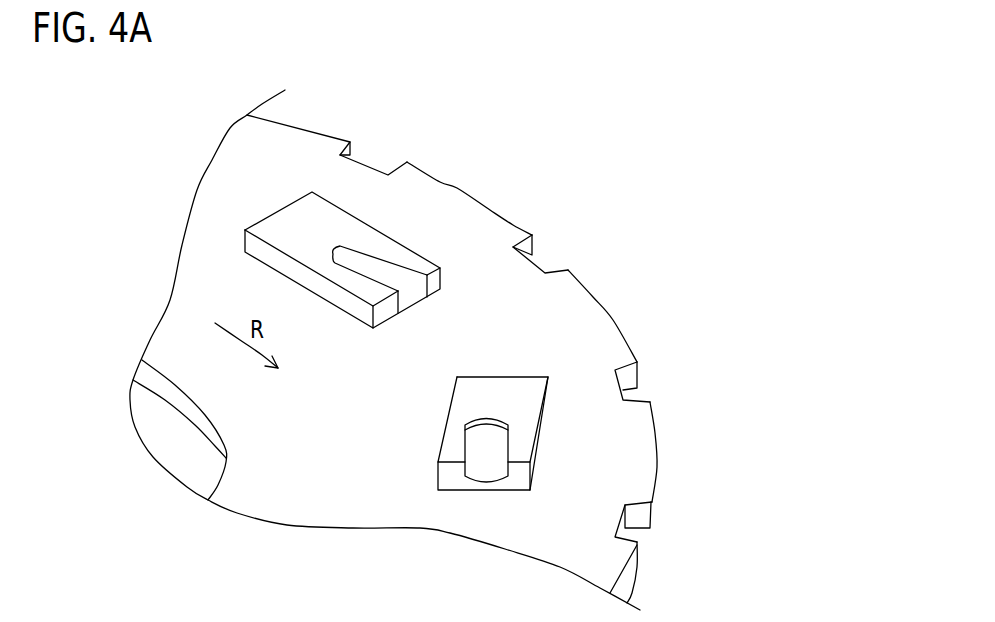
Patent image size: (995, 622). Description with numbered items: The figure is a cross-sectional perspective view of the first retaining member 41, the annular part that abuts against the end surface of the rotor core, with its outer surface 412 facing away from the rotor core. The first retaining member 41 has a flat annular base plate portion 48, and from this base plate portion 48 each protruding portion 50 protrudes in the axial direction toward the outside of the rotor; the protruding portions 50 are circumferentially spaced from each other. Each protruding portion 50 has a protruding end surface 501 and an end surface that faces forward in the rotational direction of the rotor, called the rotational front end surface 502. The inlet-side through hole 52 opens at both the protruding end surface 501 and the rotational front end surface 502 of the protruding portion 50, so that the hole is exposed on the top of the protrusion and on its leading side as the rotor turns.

The first retaining member 41 is at (400, 350).
The base plate portion 48 is at (443, 208).
The outer surface 412 is at (577, 313).
The protruding portion 50 is at (409, 322).
The protruding end surface 501 is at (312, 218).
The rotational front end surface 502 is at (433, 283).
The inlet-side through hole 52 is at (387, 273).